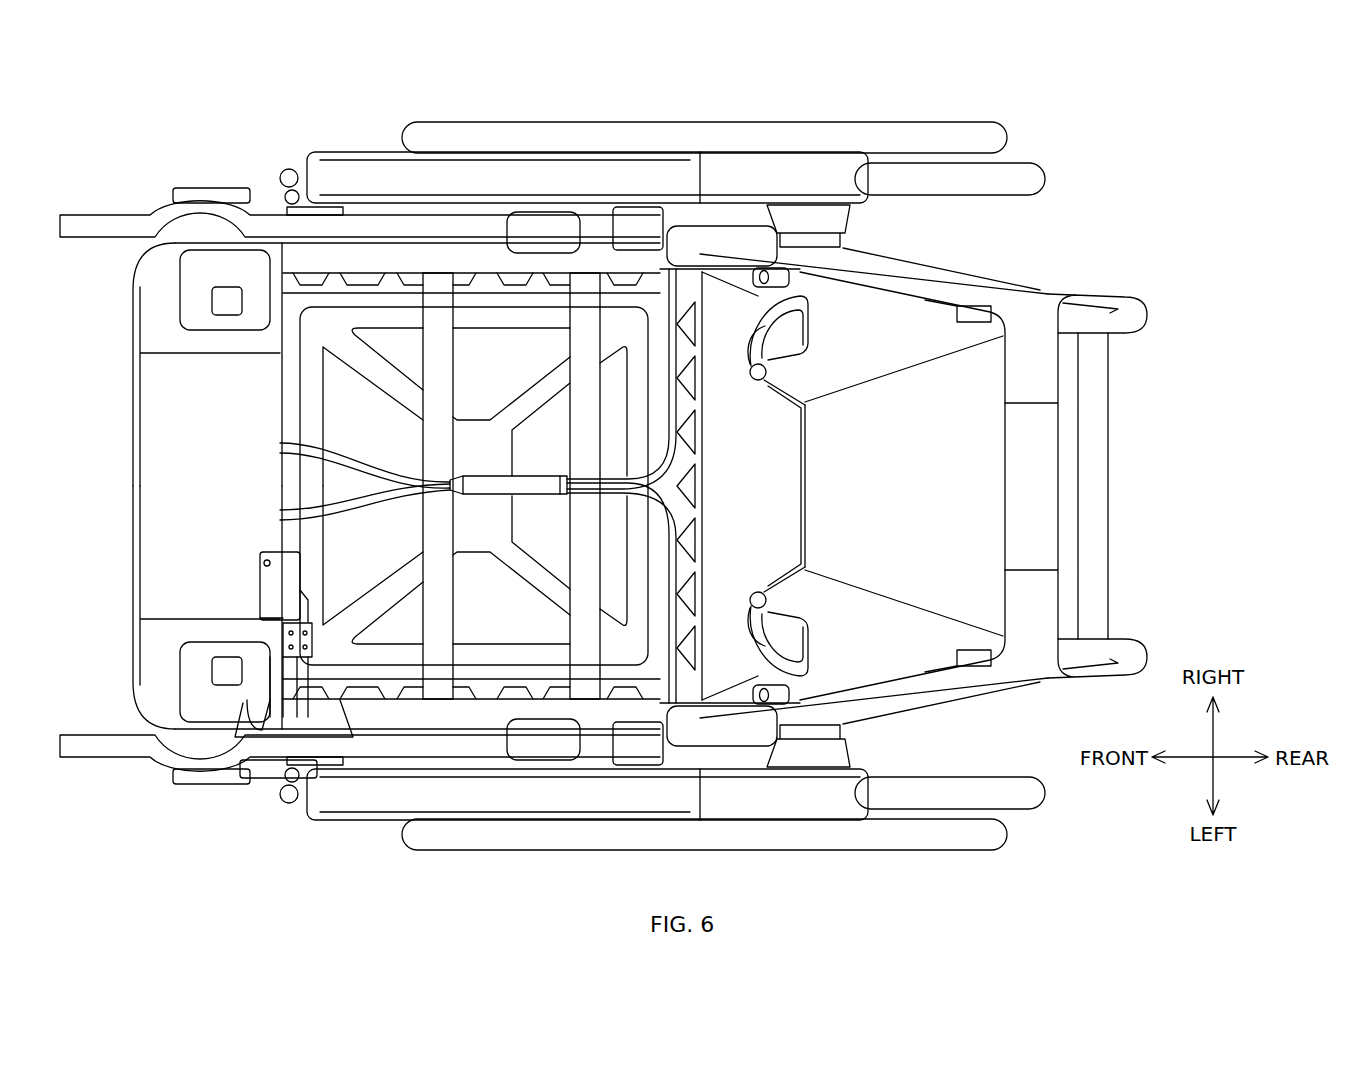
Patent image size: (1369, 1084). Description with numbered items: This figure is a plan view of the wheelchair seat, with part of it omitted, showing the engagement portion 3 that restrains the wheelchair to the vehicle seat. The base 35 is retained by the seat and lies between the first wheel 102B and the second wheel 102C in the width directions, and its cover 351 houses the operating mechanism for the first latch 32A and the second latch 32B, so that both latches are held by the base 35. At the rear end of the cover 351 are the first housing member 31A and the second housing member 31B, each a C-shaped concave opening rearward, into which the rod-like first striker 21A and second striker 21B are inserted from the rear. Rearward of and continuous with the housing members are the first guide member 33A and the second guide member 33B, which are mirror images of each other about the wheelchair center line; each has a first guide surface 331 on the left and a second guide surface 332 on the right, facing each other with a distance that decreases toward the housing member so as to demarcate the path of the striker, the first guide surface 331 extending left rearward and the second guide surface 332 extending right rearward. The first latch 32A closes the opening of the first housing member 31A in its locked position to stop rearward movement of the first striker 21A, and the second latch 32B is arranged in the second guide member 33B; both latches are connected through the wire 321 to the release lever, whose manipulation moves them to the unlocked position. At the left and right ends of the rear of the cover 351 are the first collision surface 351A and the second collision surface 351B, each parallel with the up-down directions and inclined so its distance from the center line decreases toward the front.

The engagement portion 3 is at (832, 460).
The base 35 is at (822, 530).
The cover 351 is at (783, 499).
The first collision surface 351A is at (803, 681).
The second collision surface 351B is at (803, 293).
The second guide surface 332 is at (806, 392).
The first guide surface 331 is at (778, 373).
The first latch 32A is at (785, 598).
The second latch 32B is at (785, 384).
The first guide member 33A is at (790, 588).
The second guide member 33B is at (790, 392).
The first housing member 31A is at (772, 617).
The second housing member 31B is at (772, 363).
The first striker 21A is at (800, 632).
The second striker 21B is at (800, 348).
The first wheel 102B is at (1030, 787).
The second wheel 102C is at (1030, 182).
The wire 321 is at (500, 484).